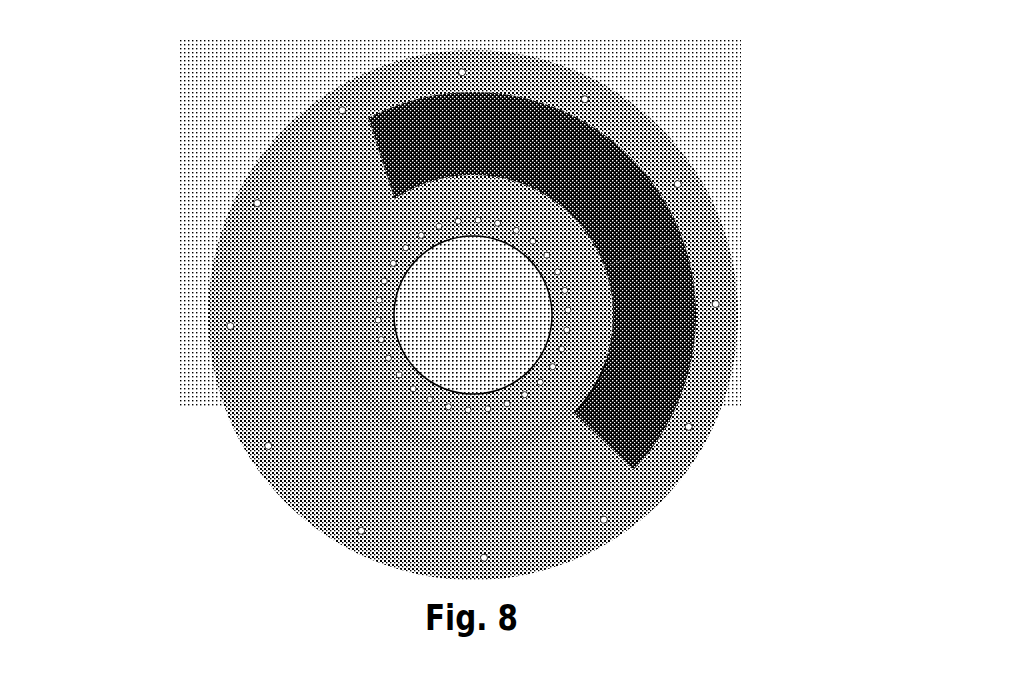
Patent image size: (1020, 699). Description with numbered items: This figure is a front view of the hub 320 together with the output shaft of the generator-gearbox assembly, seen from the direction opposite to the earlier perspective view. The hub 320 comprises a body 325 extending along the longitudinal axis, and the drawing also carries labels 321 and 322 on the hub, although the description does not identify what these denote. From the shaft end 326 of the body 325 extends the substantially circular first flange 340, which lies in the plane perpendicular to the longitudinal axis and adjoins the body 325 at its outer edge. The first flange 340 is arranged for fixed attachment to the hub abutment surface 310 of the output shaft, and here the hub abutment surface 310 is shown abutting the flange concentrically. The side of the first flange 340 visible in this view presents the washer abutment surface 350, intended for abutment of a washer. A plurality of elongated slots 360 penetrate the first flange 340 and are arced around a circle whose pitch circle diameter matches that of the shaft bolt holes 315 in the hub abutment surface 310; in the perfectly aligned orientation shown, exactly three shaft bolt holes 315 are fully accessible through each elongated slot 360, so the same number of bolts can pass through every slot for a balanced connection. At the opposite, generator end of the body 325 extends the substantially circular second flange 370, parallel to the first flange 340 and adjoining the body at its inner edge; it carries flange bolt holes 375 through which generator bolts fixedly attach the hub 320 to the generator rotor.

The hub abutment surface 310 is at (373, 287).
The shaft bolt holes 315 is at (568, 333).
The hub 320 is at (220, 163).
The flange plate 321 is at (527, 142).
The lower channel portion 322 is at (620, 378).
The body 325 is at (645, 250).
The shaft end 326 is at (323, 362).
The first flange 340 is at (312, 333).
The washer abutment surface 350 is at (540, 405).
The elongated slots 360 is at (452, 410).
The second flange 370 is at (242, 457).
The flange bolt holes 375 is at (497, 553).